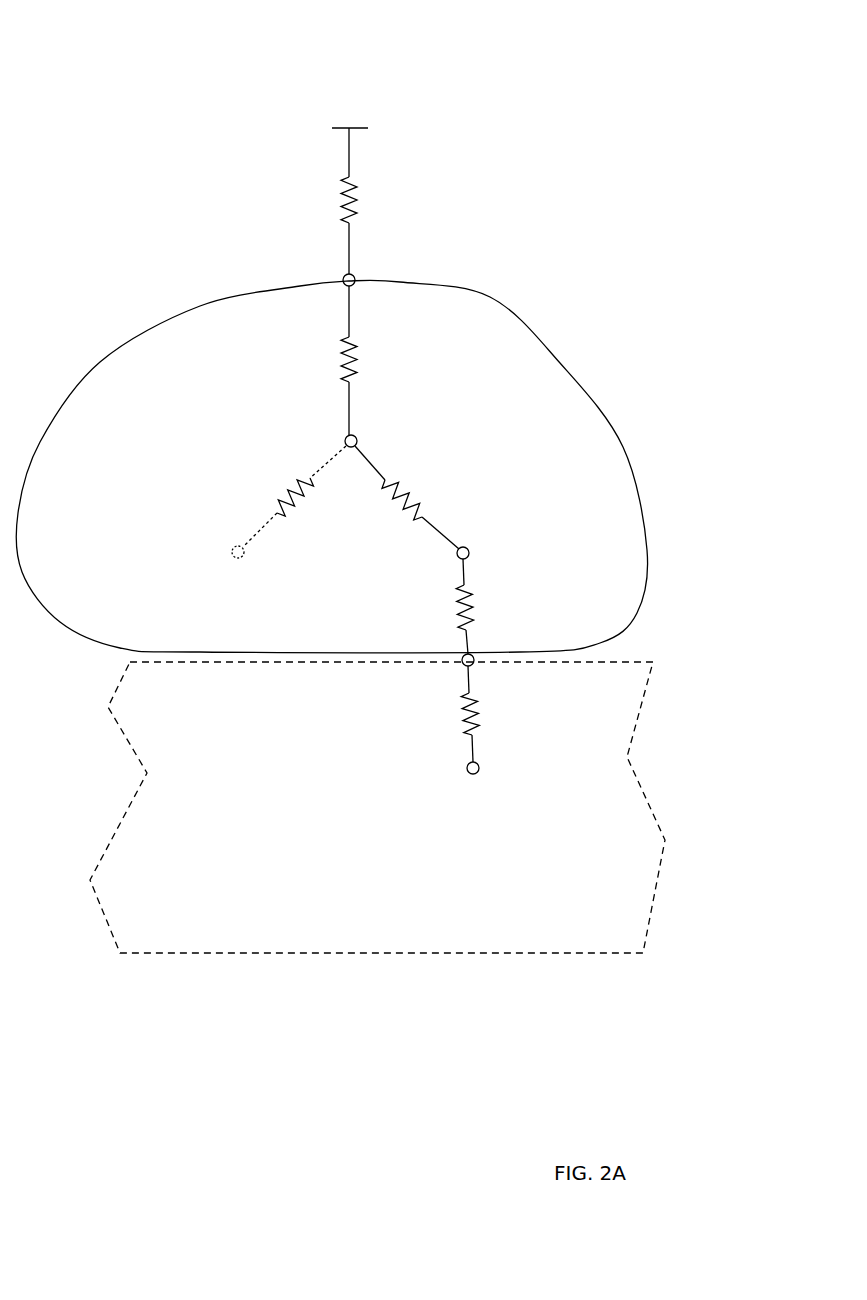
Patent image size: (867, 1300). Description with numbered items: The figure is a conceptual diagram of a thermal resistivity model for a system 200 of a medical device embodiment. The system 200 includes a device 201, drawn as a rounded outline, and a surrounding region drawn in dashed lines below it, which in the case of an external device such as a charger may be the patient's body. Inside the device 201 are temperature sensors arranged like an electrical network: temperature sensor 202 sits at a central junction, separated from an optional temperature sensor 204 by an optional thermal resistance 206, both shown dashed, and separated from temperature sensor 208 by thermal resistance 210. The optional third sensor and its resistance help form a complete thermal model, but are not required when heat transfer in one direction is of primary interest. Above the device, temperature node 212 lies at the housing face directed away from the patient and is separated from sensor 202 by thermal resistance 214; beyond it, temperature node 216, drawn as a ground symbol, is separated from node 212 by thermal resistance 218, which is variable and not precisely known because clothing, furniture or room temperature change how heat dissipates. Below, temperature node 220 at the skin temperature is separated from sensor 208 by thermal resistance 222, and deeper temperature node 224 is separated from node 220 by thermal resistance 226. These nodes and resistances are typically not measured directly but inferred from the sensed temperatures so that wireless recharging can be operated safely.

The system 200 is at (620, 88).
The device 201 is at (622, 447).
The temperature sensor 202 is at (368, 441).
The temperature sensor 204 is at (230, 543).
The thermal resistance 206 is at (290, 520).
The temperature sensor 208 is at (470, 553).
The thermal resistance 210 is at (440, 497).
The temperature node 212 is at (310, 284).
The thermal resistance 214 is at (368, 347).
The temperature node 216 is at (385, 124).
The thermal resistance 218 is at (335, 198).
The temperature node 220 is at (475, 662).
The thermal resistance 222 is at (455, 637).
The temperature node 224 is at (482, 770).
The thermal resistance 226 is at (450, 717).